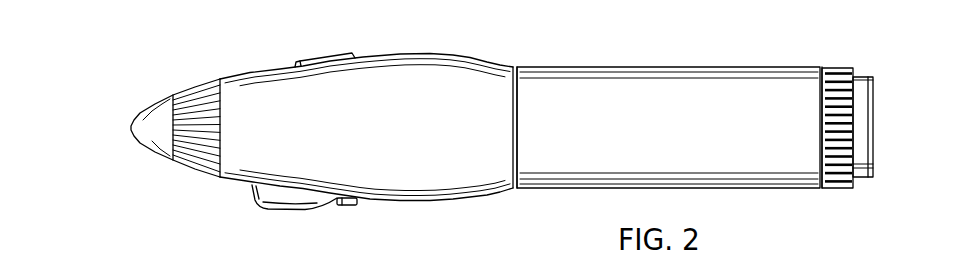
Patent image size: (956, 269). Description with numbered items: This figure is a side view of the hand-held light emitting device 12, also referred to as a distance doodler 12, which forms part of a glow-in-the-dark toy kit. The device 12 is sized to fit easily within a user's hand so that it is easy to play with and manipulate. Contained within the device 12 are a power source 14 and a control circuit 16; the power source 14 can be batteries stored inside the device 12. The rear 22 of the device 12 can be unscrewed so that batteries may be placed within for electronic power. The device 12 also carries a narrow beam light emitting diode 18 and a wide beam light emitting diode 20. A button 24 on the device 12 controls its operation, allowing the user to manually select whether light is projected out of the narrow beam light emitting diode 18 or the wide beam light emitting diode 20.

The hand-held light emitting device 12 is at (592, 33).
The power source 14 is at (668, 111).
The control circuit 16 is at (788, 111).
The narrow beam light emitting diode 18 is at (149, 128).
The wide beam light emitting diode 20 is at (278, 202).
The rear 22 is at (853, 147).
The button 24 is at (340, 42).